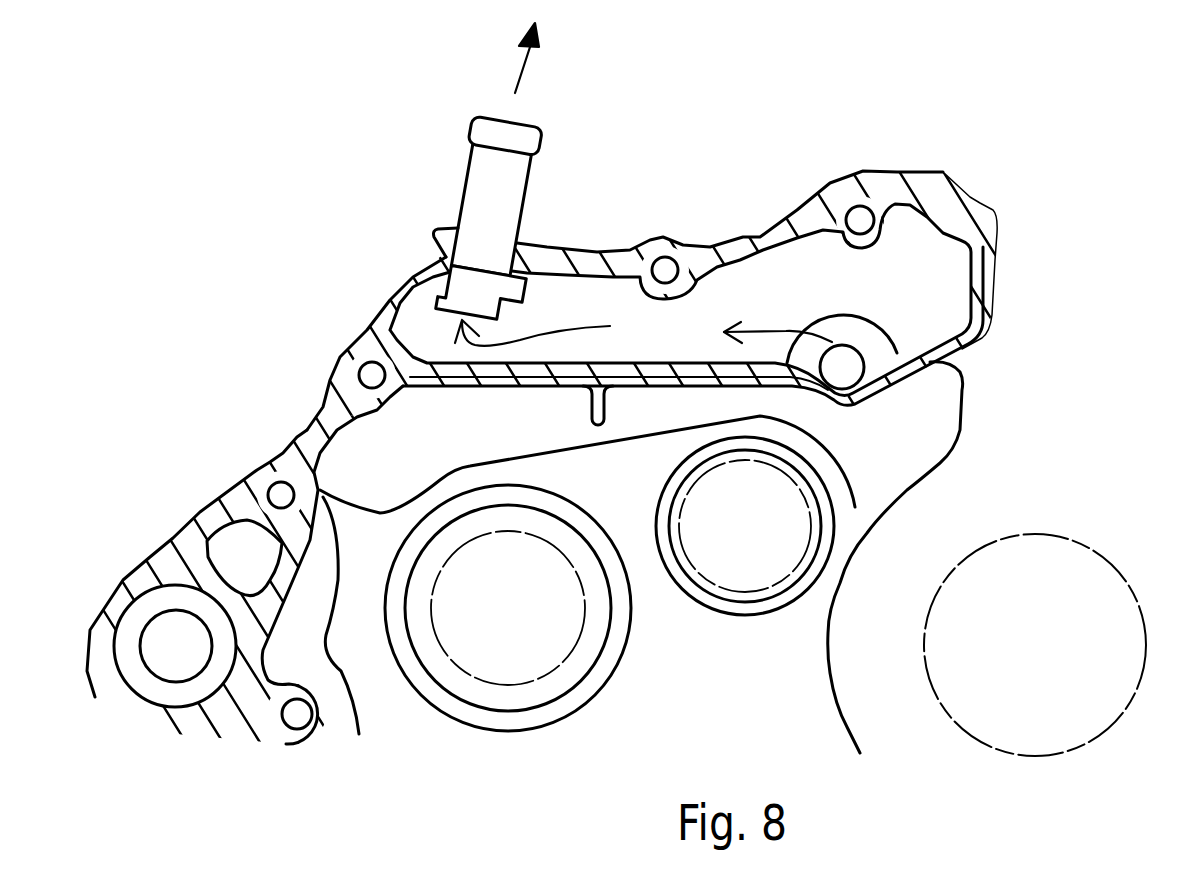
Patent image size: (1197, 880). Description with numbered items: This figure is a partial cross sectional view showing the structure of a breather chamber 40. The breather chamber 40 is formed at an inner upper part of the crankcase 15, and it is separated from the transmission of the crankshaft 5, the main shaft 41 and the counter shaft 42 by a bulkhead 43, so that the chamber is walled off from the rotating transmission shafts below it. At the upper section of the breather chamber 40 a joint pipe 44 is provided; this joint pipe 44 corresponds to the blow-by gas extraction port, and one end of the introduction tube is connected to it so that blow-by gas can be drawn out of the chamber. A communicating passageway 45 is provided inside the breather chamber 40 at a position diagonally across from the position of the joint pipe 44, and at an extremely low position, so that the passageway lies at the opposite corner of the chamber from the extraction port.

The crankshaft 5 is at (1023, 532).
The crankcase 15 is at (322, 404).
The breather chamber 40 is at (766, 275).
The main shaft 41 is at (753, 593).
The counter shaft 42 is at (543, 673).
The bulkhead 43 is at (950, 412).
The joint pipe 44 is at (462, 170).
The communicating passageway 45 is at (842, 367).